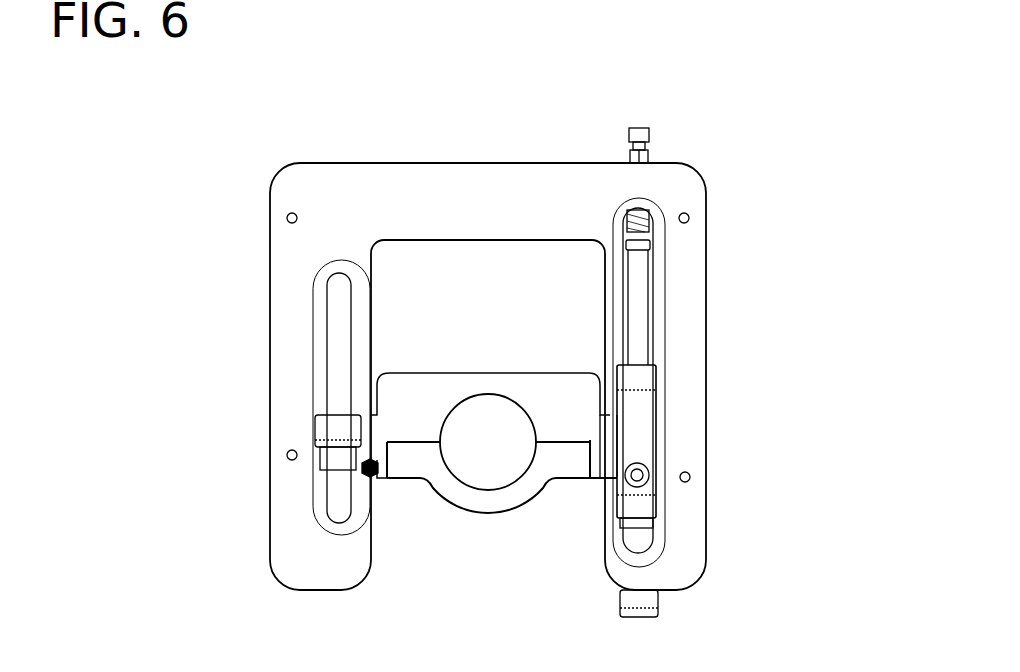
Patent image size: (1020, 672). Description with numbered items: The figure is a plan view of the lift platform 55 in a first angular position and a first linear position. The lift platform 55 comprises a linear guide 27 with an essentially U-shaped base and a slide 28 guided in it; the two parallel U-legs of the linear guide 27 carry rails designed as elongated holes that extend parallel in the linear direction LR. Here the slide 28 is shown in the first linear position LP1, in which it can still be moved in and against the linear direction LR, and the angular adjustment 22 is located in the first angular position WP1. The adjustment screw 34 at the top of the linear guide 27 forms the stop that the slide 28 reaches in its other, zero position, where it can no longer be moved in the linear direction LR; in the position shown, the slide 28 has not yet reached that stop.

The lift platform 55 is at (715, 124).
The linear guide 27 is at (288, 298).
The adjustment screw 34 is at (640, 131).
The angular adjustment 22 is at (664, 414).
The slide 28 is at (494, 558).
The first angular position WP1 is at (300, 441).
The first linear position LP1 is at (700, 448).
The linear direction LR is at (812, 330).